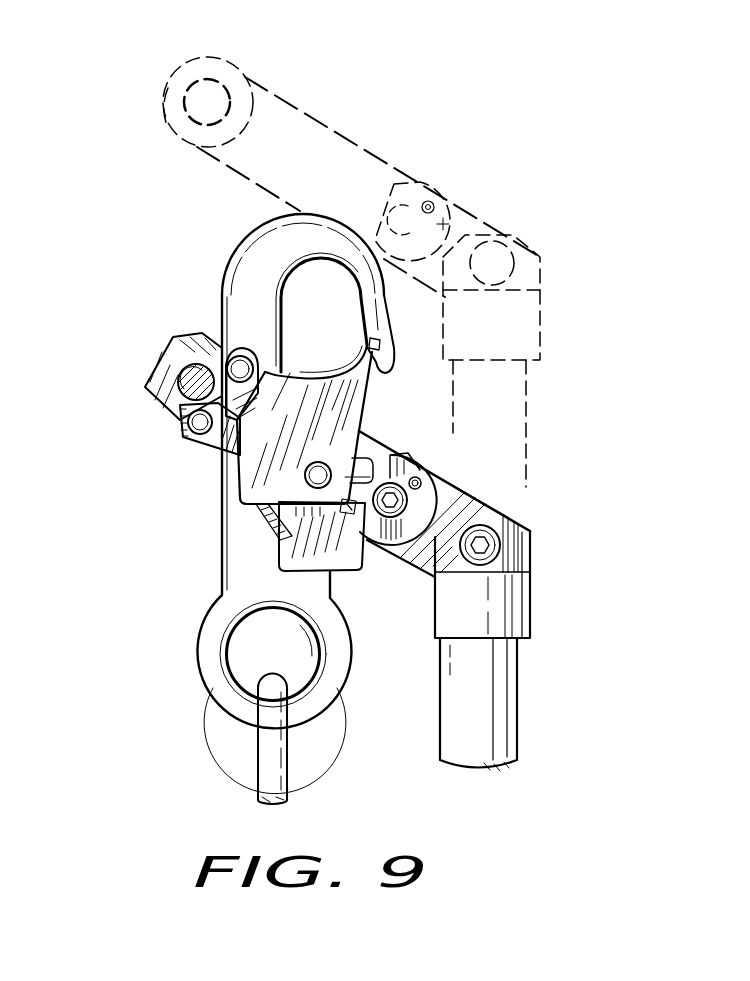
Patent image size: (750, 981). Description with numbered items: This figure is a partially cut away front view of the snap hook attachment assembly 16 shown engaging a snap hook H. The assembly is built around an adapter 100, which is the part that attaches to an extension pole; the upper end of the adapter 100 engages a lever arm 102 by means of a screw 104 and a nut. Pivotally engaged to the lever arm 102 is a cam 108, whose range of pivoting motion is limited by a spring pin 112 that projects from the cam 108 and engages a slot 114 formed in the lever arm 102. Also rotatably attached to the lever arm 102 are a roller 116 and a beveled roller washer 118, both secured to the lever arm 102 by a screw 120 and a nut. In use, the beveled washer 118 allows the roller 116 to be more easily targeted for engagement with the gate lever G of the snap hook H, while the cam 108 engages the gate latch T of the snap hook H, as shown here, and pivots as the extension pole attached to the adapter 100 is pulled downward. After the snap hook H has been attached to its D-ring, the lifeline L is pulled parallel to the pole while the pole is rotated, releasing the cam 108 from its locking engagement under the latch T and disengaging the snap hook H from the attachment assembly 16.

The snap hook attachment assembly 16 is at (531, 547).
The adapter 100 is at (500, 723).
The lever arm 102 is at (240, 174).
The screw 104 is at (502, 562).
The cam 108 is at (427, 504).
The spring pin 112 is at (430, 479).
The slot 114 is at (411, 467).
The roller 116 is at (176, 388).
The roller washer 118 is at (250, 103).
The screw 120 is at (187, 380).
The snap hook H is at (221, 574).
The gate lever G is at (180, 434).
The gate latch T is at (345, 555).
The lifeline L is at (257, 764).